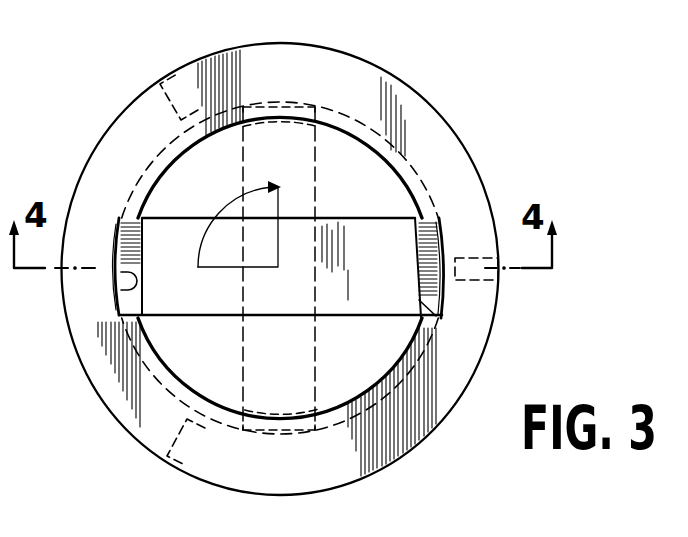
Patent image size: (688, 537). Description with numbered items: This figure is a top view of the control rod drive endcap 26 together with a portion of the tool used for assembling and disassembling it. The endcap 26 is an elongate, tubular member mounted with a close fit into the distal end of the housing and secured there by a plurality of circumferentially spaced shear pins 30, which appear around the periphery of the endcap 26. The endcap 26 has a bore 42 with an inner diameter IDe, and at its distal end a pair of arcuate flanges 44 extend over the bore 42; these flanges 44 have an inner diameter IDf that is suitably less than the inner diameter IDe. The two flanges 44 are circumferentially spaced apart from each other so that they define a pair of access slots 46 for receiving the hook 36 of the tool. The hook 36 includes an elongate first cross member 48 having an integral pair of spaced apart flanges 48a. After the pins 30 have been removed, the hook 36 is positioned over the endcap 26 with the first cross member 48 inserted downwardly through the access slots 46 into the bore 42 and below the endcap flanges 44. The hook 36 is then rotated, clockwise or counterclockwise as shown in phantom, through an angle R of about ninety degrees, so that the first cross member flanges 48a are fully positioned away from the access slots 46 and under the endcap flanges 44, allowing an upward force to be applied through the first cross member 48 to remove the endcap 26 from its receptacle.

The endcap 26 is at (445, 142).
The shear pins 30 is at (163, 80).
The hook 36 is at (290, 382).
The bore 42 is at (120, 301).
The arcuate flanges 44 is at (168, 166).
The access slots 46 is at (122, 316).
The first cross member 48 is at (402, 234).
The first cross member flanges 48a is at (442, 318).
The angle R is at (230, 207).
The inner diameter of the bore IDe is at (412, 184).
The inner diameter of the flanges IDf is at (337, 118).